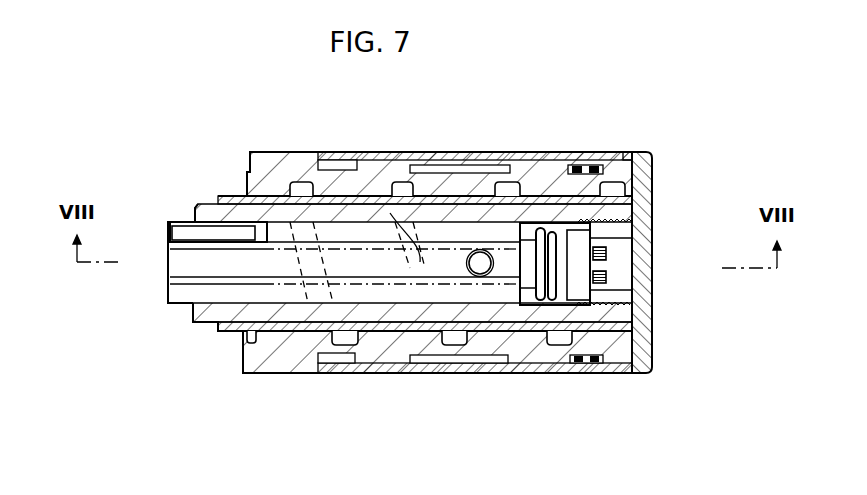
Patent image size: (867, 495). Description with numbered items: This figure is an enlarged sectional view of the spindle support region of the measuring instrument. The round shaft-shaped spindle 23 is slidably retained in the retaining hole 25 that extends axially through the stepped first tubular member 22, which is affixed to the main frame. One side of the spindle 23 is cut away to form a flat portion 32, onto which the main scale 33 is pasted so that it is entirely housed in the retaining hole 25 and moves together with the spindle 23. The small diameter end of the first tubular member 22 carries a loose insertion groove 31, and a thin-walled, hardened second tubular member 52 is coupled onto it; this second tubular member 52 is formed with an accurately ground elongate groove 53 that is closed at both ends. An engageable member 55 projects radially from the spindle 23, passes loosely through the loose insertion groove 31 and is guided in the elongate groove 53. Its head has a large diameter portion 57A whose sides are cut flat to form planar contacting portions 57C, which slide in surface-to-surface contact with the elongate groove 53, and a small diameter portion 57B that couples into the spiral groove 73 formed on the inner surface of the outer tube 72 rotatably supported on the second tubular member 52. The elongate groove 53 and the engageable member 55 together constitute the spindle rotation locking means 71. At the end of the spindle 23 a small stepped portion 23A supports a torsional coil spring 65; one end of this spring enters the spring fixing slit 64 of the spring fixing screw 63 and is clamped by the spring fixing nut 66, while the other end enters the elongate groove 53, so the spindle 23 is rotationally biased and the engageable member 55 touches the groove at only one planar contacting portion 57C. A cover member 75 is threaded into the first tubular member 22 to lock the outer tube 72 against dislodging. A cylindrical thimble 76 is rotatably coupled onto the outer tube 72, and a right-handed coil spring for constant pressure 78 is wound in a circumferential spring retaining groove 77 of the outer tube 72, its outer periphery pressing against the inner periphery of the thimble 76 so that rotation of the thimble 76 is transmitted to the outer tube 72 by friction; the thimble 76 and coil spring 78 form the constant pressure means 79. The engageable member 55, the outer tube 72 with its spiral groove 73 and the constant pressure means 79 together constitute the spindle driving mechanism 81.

The first tubular member 22 is at (200, 312).
The spindle 23 is at (374, 331).
The small stepped portion 23A is at (524, 331).
The retaining hole 25 is at (330, 226).
The loose insertion groove 31 is at (178, 278).
The flat portion 32 is at (200, 238).
The main scale 33 is at (170, 232).
The second tubular member 52 is at (245, 336).
The elongate groove 53 is at (418, 210).
The engageable member 55 is at (478, 250).
The large diameter portion 57A is at (467, 262).
The small diameter portion 57B is at (490, 277).
The planar contacting portions 57C is at (476, 251).
The spring fixing screw 63 is at (606, 253).
The spring fixing slit 64 is at (606, 273).
The torsional coil spring 65 is at (545, 226).
The spring fixing nut 66 is at (564, 338).
The spindle rotation locking means 71 is at (480, 113).
The outer tube 72 is at (543, 190).
The spiral groove 73 is at (337, 343).
The cover member 75 is at (643, 318).
The thimble 76 is at (623, 157).
The spring retaining groove 77 is at (601, 165).
The coil spring for constant pressure 78 is at (581, 186).
The constant pressure means 79 is at (604, 79).
The spindle driving mechanism 81 is at (582, 102).